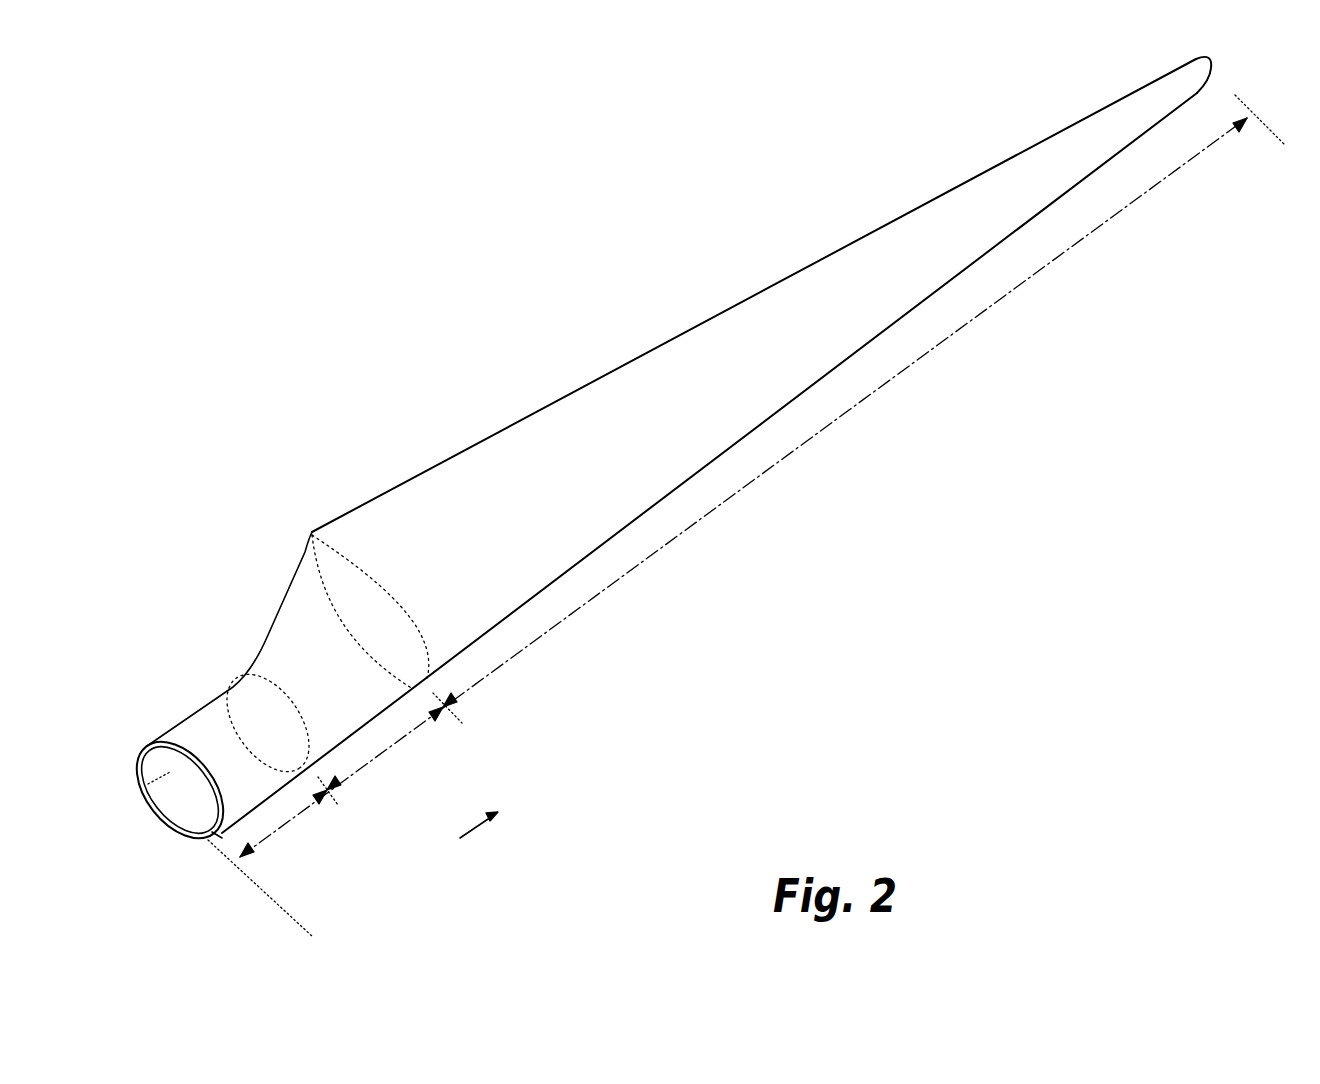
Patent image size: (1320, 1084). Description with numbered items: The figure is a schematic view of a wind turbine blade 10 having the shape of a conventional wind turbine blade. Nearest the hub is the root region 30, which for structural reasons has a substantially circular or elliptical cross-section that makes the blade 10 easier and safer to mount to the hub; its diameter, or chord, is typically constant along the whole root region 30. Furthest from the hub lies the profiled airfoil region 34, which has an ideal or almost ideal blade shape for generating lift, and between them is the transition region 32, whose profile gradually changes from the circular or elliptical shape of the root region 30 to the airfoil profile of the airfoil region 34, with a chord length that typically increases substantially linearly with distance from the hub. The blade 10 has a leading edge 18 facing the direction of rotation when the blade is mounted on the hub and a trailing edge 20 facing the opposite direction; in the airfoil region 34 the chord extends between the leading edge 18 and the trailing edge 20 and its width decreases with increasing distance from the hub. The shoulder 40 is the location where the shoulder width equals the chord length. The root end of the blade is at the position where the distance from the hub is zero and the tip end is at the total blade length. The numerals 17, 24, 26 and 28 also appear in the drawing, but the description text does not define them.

The wind turbine blade 10 is at (490, 308).
The root 17 is at (133, 787).
The leading edge 18 is at (885, 333).
The trailing edge 20 is at (743, 298).
The transition region 24 is at (175, 728).
The root end 26 is at (170, 833).
The blade shell 28 is at (164, 735).
The root region 30 is at (285, 820).
The transition region 32 is at (392, 750).
The airfoil region 34 is at (765, 472).
The shoulder 40 is at (312, 540).